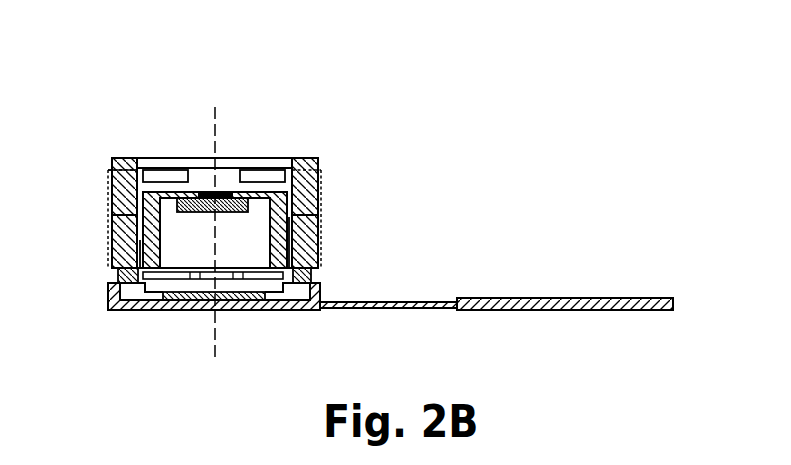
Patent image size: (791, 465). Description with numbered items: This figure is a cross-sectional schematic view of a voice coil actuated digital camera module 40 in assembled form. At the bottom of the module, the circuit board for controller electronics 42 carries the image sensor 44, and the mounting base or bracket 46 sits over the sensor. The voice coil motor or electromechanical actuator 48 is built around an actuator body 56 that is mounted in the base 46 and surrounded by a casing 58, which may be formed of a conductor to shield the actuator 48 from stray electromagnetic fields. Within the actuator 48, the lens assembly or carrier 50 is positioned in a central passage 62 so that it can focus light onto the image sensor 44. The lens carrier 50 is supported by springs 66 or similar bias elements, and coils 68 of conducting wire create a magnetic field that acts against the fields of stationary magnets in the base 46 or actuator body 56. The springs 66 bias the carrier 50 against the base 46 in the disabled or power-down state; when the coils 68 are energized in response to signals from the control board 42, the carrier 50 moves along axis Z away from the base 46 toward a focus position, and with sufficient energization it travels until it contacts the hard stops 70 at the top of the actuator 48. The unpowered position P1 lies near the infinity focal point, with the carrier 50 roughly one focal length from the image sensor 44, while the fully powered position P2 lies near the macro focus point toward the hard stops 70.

The camera module 40 is at (145, 63).
The circuit board for controller electronics 42 is at (449, 319).
The image sensor 44 is at (237, 305).
The mounting base or bracket 46 is at (120, 277).
The voice coil motor or electromechanical actuator 48 is at (202, 149).
The lens assembly or carrier 50 is at (120, 185).
The actuator body 56 is at (310, 192).
The casing 58 is at (308, 233).
The passage 62 is at (254, 249).
The springs 66 is at (143, 212).
The coils 68 is at (140, 222).
The hard stops 70 is at (173, 177).
The unpowered position P1 is at (118, 283).
The fully powered or actuated position P2 is at (110, 172).
The axis Z is at (201, 241).